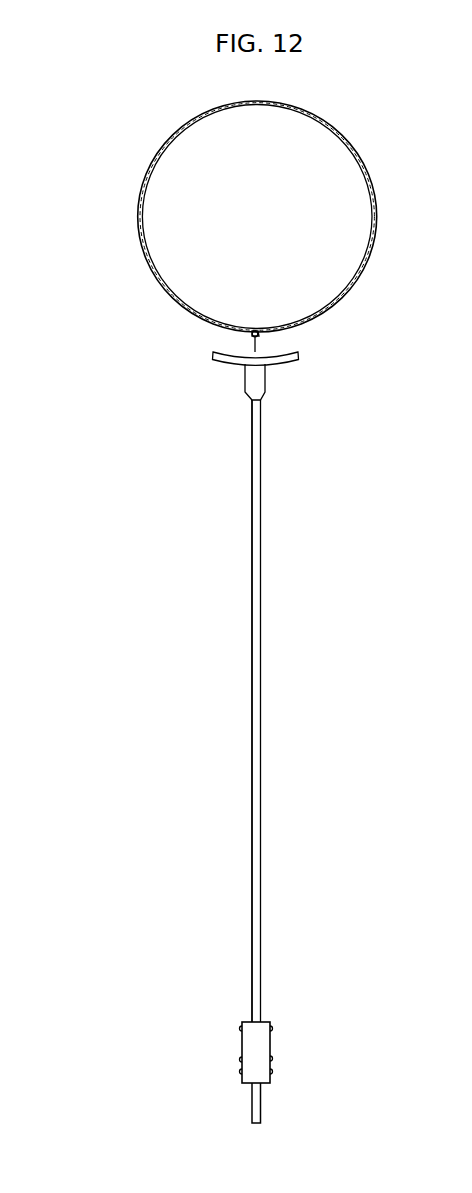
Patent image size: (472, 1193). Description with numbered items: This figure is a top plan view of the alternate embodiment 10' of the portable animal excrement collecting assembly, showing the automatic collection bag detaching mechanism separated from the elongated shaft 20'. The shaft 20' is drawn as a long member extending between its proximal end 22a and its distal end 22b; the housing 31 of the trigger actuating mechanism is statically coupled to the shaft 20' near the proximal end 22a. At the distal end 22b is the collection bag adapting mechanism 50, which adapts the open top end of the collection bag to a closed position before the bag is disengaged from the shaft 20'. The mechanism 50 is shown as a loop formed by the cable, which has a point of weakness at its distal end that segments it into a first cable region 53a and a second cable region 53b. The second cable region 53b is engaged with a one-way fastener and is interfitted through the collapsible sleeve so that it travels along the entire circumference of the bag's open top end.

The alternate embodiment 10' is at (214, 570).
The collection bag adapting mechanism 50 is at (258, 322).
The first cable region 53a is at (262, 334).
The second cable region 53b is at (253, 332).
The shaft 20' is at (270, 742).
The distal end 22b is at (253, 502).
The housing 31 is at (262, 1035).
The proximal end 22a is at (257, 1102).